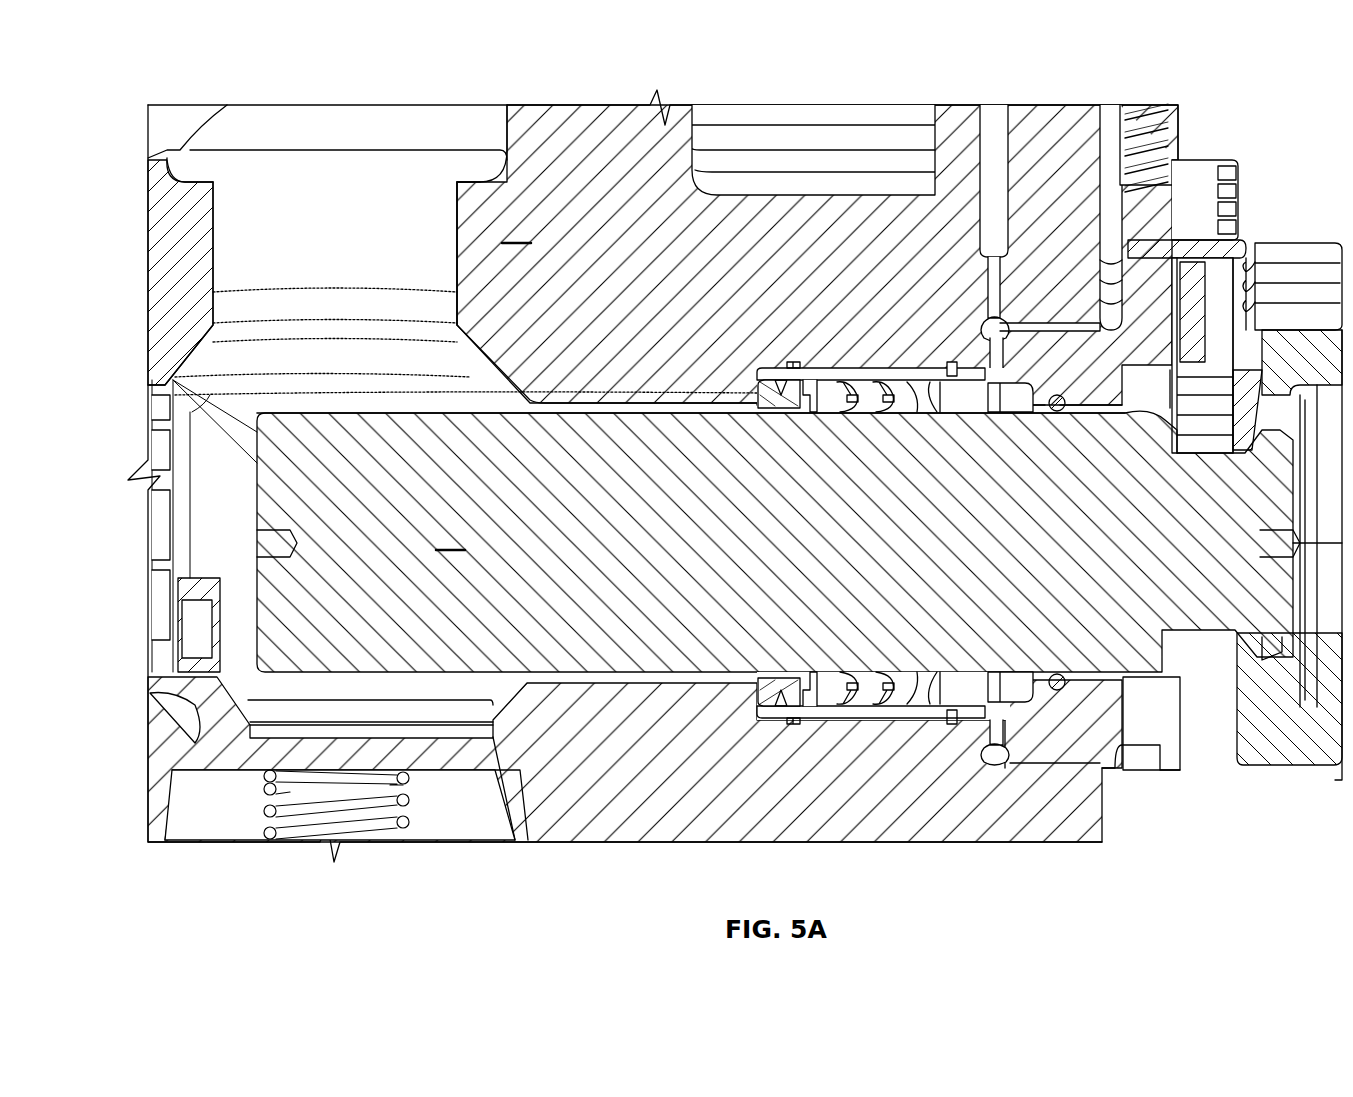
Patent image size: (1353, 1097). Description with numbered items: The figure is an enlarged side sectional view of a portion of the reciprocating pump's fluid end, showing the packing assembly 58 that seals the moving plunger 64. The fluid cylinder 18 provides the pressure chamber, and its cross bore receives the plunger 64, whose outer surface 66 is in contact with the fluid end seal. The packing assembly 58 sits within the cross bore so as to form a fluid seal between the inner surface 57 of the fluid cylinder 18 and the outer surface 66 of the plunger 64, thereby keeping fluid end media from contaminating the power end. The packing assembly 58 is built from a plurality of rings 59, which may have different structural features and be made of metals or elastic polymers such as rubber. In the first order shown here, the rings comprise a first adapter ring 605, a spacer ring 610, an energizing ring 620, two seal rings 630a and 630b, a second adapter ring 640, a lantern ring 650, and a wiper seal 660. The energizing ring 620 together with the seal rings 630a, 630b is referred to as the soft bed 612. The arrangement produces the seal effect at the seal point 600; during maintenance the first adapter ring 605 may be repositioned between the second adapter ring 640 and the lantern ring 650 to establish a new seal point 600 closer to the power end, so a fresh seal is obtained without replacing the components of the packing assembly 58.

The fluid cylinder 18 is at (705, 278).
The inner surface 57 is at (903, 378).
The packing assembly 58 is at (760, 655).
The rings 59 is at (900, 820).
The plunger 64 is at (799, 541).
The outer surface 66 is at (397, 416).
The seal point 600 is at (896, 409).
The first adapter ring 605 is at (776, 408).
The spacer ring 610 is at (775, 372).
The soft bed 612 is at (859, 326).
The energizing ring 620 is at (830, 408).
The seal ring 630a is at (858, 414).
The seal ring 630b is at (903, 414).
The second adapter ring 640 is at (940, 412).
The lantern ring 650 is at (1025, 412).
The wiper seal 660 is at (1062, 396).